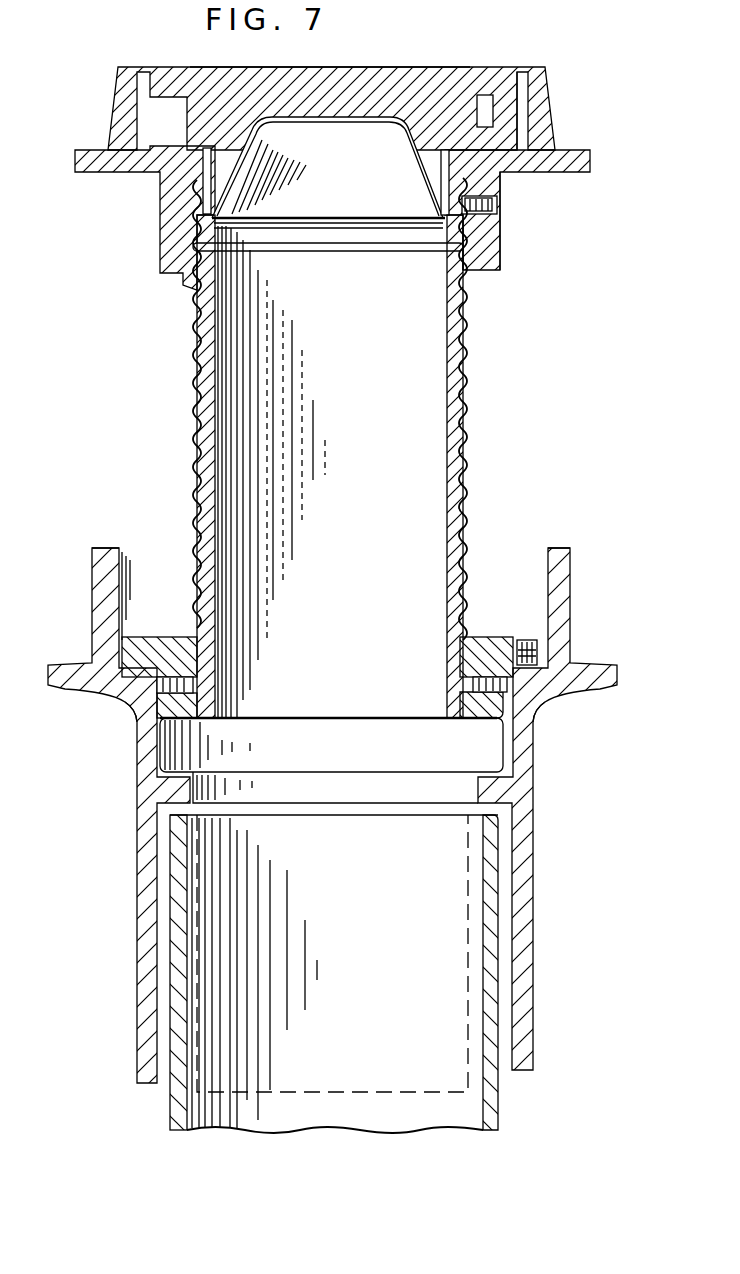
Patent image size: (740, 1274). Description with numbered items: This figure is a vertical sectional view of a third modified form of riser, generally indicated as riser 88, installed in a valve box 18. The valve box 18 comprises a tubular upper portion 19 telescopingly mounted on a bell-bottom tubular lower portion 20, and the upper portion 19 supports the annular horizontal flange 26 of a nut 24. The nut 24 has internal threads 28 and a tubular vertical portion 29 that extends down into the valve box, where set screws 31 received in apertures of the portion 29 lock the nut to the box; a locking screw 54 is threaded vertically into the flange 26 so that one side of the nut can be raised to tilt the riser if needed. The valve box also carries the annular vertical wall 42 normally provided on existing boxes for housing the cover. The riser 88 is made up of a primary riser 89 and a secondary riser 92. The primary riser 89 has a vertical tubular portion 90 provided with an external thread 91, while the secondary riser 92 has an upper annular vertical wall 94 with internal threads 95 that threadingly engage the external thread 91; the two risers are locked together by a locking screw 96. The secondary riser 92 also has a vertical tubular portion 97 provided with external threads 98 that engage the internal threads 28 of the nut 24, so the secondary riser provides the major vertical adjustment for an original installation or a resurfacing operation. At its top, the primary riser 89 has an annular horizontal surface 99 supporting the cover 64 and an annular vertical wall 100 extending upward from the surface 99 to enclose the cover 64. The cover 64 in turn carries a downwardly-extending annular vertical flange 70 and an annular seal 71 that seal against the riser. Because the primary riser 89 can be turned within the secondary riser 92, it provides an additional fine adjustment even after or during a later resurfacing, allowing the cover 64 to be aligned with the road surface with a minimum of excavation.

The valve box 18 is at (570, 839).
The tubular upper portion 19 is at (523, 757).
The bell-bottom tubular lower portion 20 is at (493, 1095).
The nut 24 is at (482, 645).
The annular horizontal flange 26 is at (543, 637).
The internal threads 28 is at (461, 710).
The tubular vertical portion 29 is at (495, 717).
The set screws 31 is at (138, 712).
The annular vertical wall 42 is at (562, 573).
The locking screw 54 is at (526, 645).
The cover 64 is at (374, 95).
The annular vertical flange 70 is at (428, 168).
The annular seal 71 is at (441, 207).
The riser 88 is at (622, 184).
The primary riser 89 is at (546, 156).
The vertical tubular portion 90 is at (446, 222).
The external thread 91 is at (472, 222).
The secondary riser 92 is at (455, 302).
The upper annular vertical wall 94 is at (493, 230).
The internal threads 95 is at (448, 240).
The locking screw 96 is at (498, 205).
The vertical tubular portion 97 is at (458, 443).
The external threads 98 is at (466, 385).
The annular horizontal surface 99 is at (513, 143).
The annular vertical wall 100 is at (543, 79).